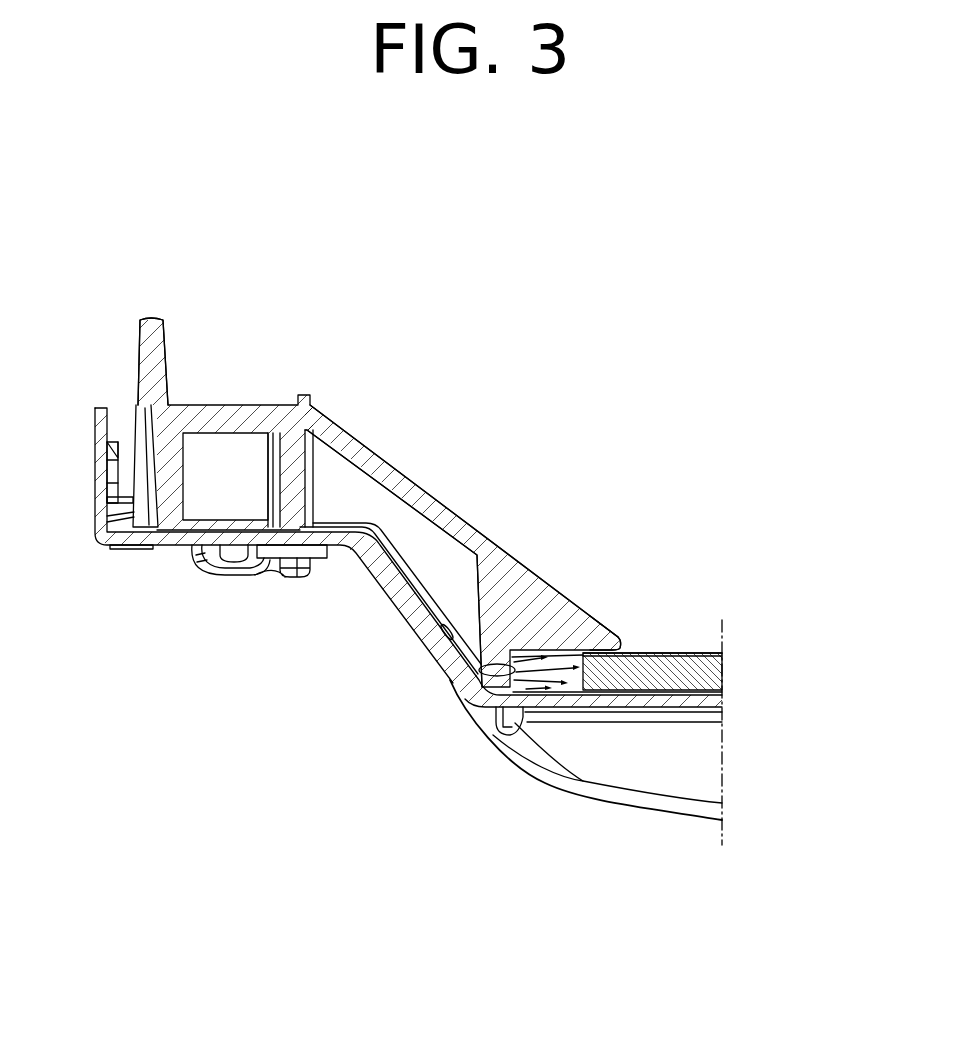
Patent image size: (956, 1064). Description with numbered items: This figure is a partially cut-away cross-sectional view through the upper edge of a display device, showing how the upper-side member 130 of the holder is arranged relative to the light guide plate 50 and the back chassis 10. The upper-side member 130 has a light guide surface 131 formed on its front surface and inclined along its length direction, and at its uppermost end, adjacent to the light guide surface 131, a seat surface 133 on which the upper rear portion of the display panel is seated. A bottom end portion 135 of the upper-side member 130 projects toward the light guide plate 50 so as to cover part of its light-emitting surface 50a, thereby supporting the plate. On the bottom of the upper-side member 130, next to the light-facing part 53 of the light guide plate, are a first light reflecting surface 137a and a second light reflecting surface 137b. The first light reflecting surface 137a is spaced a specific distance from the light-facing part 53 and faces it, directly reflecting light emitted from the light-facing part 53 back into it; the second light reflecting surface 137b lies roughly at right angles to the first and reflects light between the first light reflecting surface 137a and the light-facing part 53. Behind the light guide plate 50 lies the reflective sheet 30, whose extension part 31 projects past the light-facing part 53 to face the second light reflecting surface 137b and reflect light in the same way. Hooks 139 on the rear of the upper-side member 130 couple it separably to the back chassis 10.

The back chassis 10 is at (663, 808).
The reflective sheet 30 is at (657, 695).
The extension part 31 is at (541, 707).
The light guide plate 50 is at (674, 625).
The light-emitting surface 50a is at (703, 652).
The light-facing part 53 is at (561, 707).
The upper-side member 130 is at (474, 496).
The light guide surface 131 is at (395, 462).
The seat surface 133 is at (230, 403).
The bottom end portion 135 is at (608, 638).
The first light reflecting surface 137a is at (482, 668).
The second light reflecting surface 137b is at (557, 652).
The hook 139 is at (486, 733).